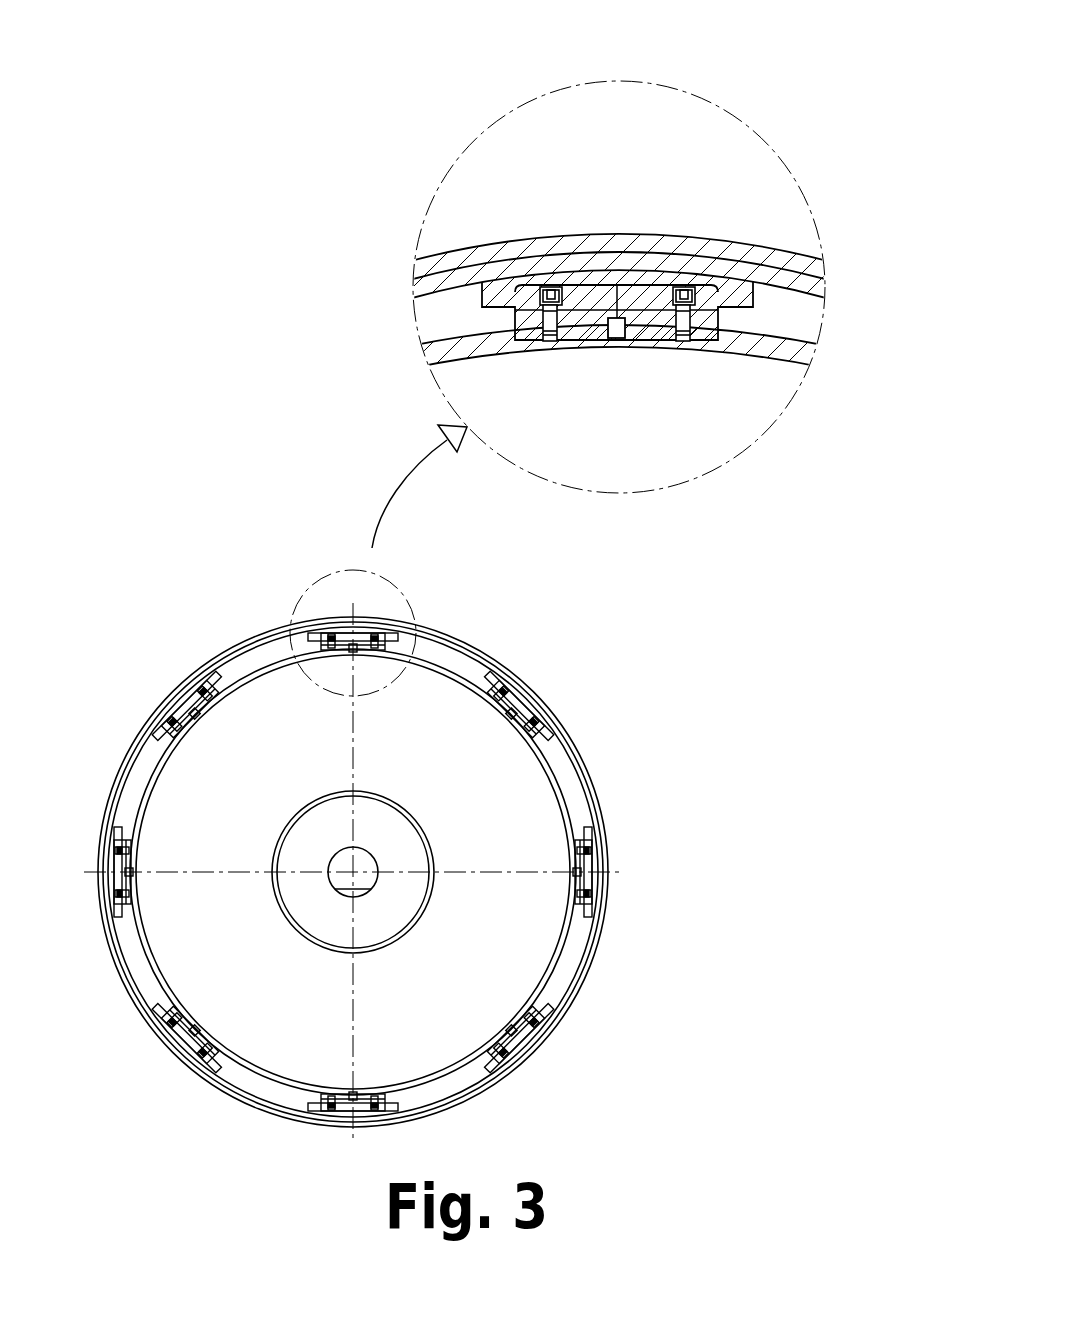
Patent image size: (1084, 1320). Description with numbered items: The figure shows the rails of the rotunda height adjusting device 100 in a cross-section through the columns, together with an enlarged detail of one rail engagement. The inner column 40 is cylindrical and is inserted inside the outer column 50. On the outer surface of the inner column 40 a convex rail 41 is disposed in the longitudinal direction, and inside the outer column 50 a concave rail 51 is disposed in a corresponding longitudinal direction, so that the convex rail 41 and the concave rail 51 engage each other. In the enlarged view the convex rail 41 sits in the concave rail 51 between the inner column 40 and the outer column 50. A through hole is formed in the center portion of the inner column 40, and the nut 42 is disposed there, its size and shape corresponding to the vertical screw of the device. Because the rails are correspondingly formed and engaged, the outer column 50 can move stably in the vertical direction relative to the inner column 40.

The rotunda height adjusting device 100 is at (487, 12).
The inner column 40 is at (548, 788).
The convex rail 41 is at (709, 316).
The nut 42 is at (293, 828).
The outer column 50 is at (583, 758).
The concave rail 51 is at (487, 293).